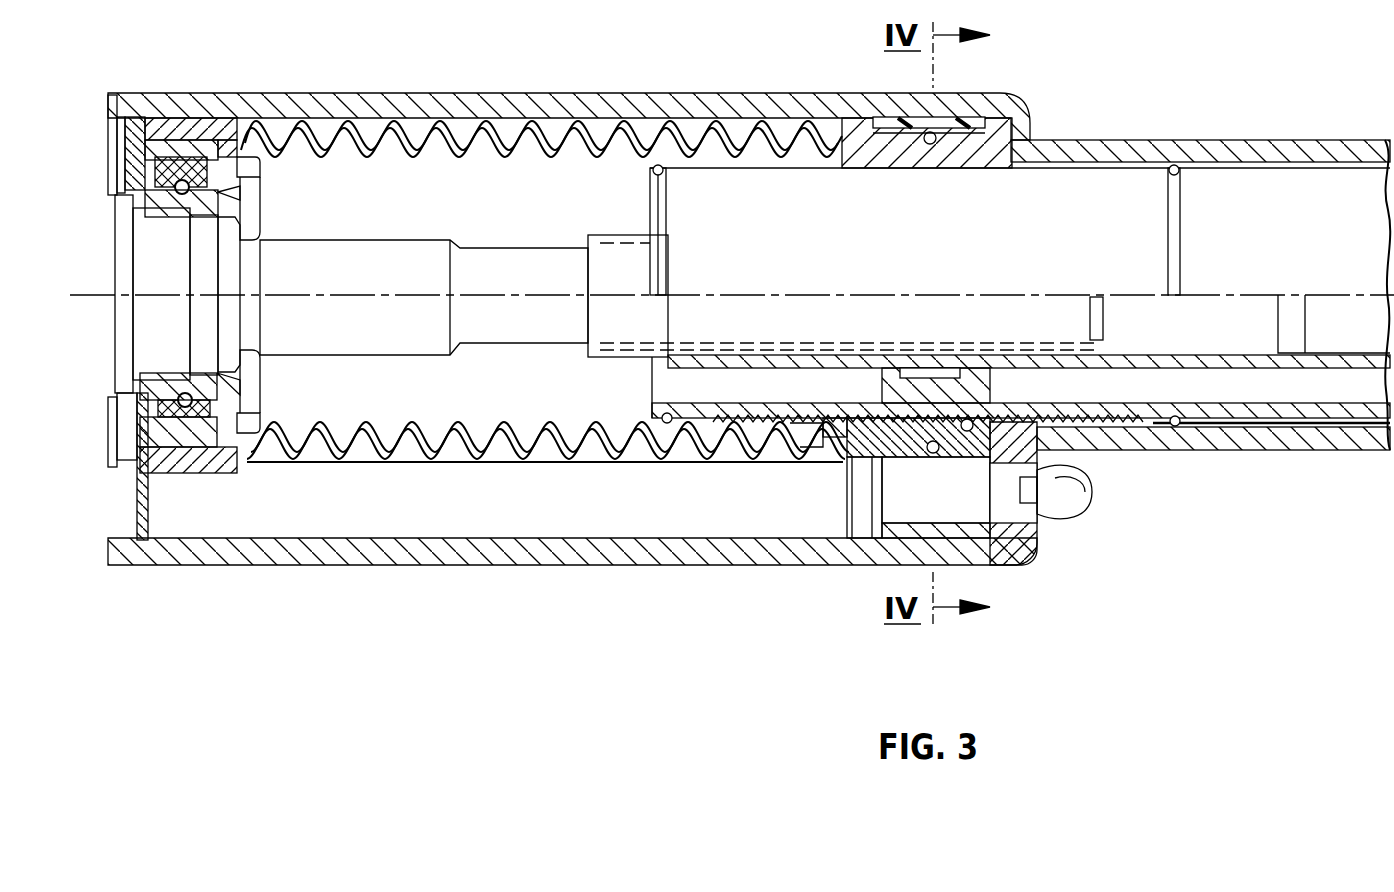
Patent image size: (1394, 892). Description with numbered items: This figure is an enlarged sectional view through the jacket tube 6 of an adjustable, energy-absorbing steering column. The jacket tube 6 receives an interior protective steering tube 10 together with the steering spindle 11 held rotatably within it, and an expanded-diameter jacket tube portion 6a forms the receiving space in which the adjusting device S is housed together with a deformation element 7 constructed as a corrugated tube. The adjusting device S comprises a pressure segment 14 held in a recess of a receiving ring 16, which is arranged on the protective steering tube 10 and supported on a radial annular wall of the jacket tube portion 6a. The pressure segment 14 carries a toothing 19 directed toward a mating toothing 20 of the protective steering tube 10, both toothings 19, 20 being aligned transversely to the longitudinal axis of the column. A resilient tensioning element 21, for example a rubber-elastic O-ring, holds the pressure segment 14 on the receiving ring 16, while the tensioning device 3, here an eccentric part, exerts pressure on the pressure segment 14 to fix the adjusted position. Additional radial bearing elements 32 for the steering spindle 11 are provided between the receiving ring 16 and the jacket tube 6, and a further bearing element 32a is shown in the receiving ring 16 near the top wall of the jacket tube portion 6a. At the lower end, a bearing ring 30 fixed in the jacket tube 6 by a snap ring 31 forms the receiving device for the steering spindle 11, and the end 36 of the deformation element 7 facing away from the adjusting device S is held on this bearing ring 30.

The tensioning device 3 is at (974, 540).
The jacket tube 6 is at (1213, 150).
The jacket tube portion 6a is at (260, 108).
The deformation element 7 is at (488, 120).
The protective steering tube 10 is at (1337, 417).
The steering spindle 11 is at (345, 250).
The pressure segment 14 is at (890, 433).
The receiving ring 16 is at (1000, 148).
The toothing 19 is at (968, 420).
The toothing 20 is at (1137, 410).
The resilient tensioning element 21 is at (930, 448).
The bearing ring 30 is at (175, 122).
The snap ring 31 is at (125, 110).
The radial bearing elements 32 is at (888, 377).
The guide strip 32a is at (965, 125).
The end of the deformation element 36 is at (272, 130).
The adjusting device S is at (1052, 548).